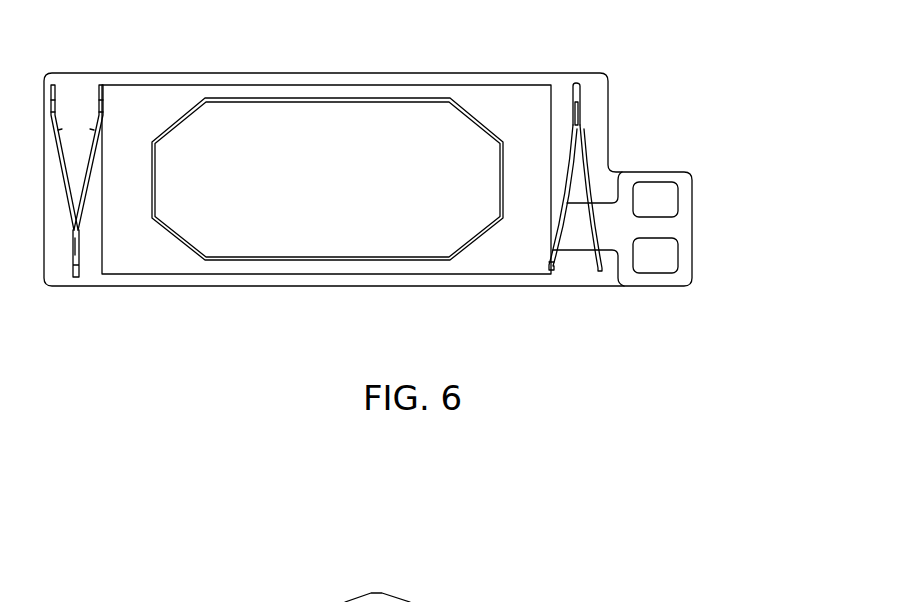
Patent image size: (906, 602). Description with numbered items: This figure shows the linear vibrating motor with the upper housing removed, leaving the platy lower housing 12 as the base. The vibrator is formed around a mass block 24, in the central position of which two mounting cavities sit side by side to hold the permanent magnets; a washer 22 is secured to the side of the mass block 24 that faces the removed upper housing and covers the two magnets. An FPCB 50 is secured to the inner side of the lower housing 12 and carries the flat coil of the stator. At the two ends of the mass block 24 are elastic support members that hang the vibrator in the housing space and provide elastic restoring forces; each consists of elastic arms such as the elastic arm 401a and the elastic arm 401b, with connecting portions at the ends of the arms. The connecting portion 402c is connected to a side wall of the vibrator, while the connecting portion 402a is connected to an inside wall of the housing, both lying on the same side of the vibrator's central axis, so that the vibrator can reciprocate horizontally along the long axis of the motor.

The lower housing 12 is at (503, 80).
The washer 22 is at (326, 113).
The mass block 24 is at (149, 102).
The FPCB 50 is at (683, 230).
The elastic arm 401a is at (585, 157).
The elastic arm 401b is at (77, 181).
The connecting portion 402a is at (605, 258).
The connecting portion 402c is at (555, 265).